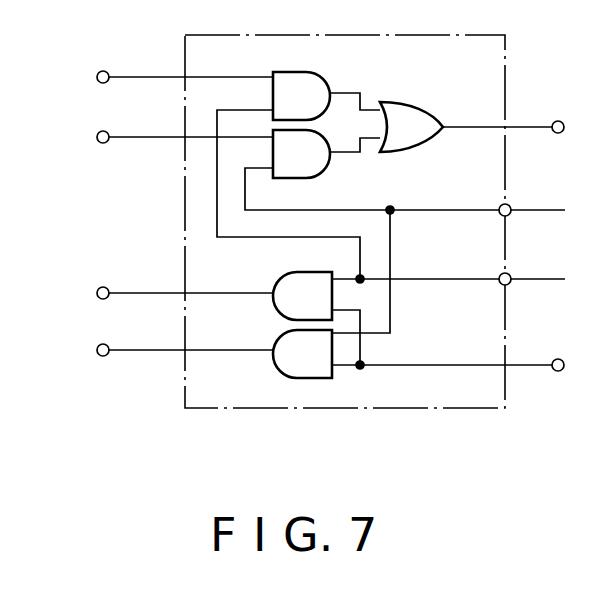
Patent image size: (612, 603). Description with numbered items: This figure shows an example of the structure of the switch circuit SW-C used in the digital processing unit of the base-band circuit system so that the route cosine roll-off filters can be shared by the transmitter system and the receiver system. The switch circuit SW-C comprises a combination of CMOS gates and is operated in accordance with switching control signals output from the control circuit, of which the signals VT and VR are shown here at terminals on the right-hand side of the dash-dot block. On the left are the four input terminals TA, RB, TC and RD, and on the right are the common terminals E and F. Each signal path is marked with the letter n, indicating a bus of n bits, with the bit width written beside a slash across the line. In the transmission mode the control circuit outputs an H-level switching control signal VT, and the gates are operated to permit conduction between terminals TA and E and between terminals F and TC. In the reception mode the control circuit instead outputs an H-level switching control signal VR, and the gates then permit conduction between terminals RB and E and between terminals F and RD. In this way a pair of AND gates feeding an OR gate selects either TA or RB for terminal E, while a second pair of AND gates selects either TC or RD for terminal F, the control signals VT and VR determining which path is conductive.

The switch circuit SW-C is at (345, 204).
The terminal TA is at (164, 78).
The terminal RB is at (165, 138).
The terminal TC is at (164, 294).
The terminal RD is at (165, 351).
The terminal E is at (514, 128).
The switching control signal VR is at (549, 211).
The switching control signal VT is at (464, 280).
The terminal F is at (458, 366).
The n-bit bus width n is at (153, 86).